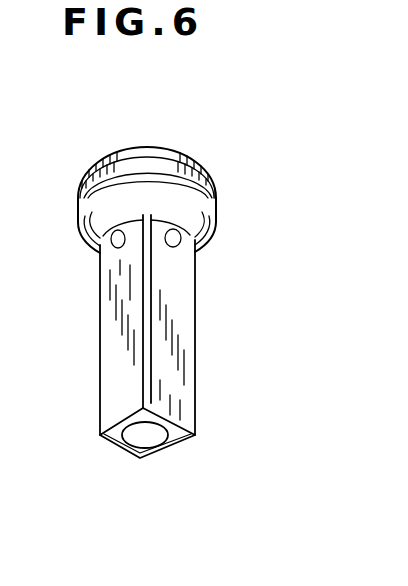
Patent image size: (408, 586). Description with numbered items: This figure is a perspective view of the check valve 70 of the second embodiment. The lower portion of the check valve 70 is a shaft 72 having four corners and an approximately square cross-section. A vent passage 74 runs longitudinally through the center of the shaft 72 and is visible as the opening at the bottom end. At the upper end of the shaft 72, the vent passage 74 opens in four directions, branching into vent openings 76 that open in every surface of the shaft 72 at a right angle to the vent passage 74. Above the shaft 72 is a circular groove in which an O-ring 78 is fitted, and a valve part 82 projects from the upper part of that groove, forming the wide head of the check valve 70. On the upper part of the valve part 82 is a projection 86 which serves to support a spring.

The check valve 70 is at (162, 140).
The shaft 72 is at (177, 340).
The vent passage 74 is at (147, 434).
The vent openings 76 is at (186, 246).
The O-ring 78 is at (192, 228).
The valve part 82 is at (206, 180).
The projection 86 is at (190, 155).